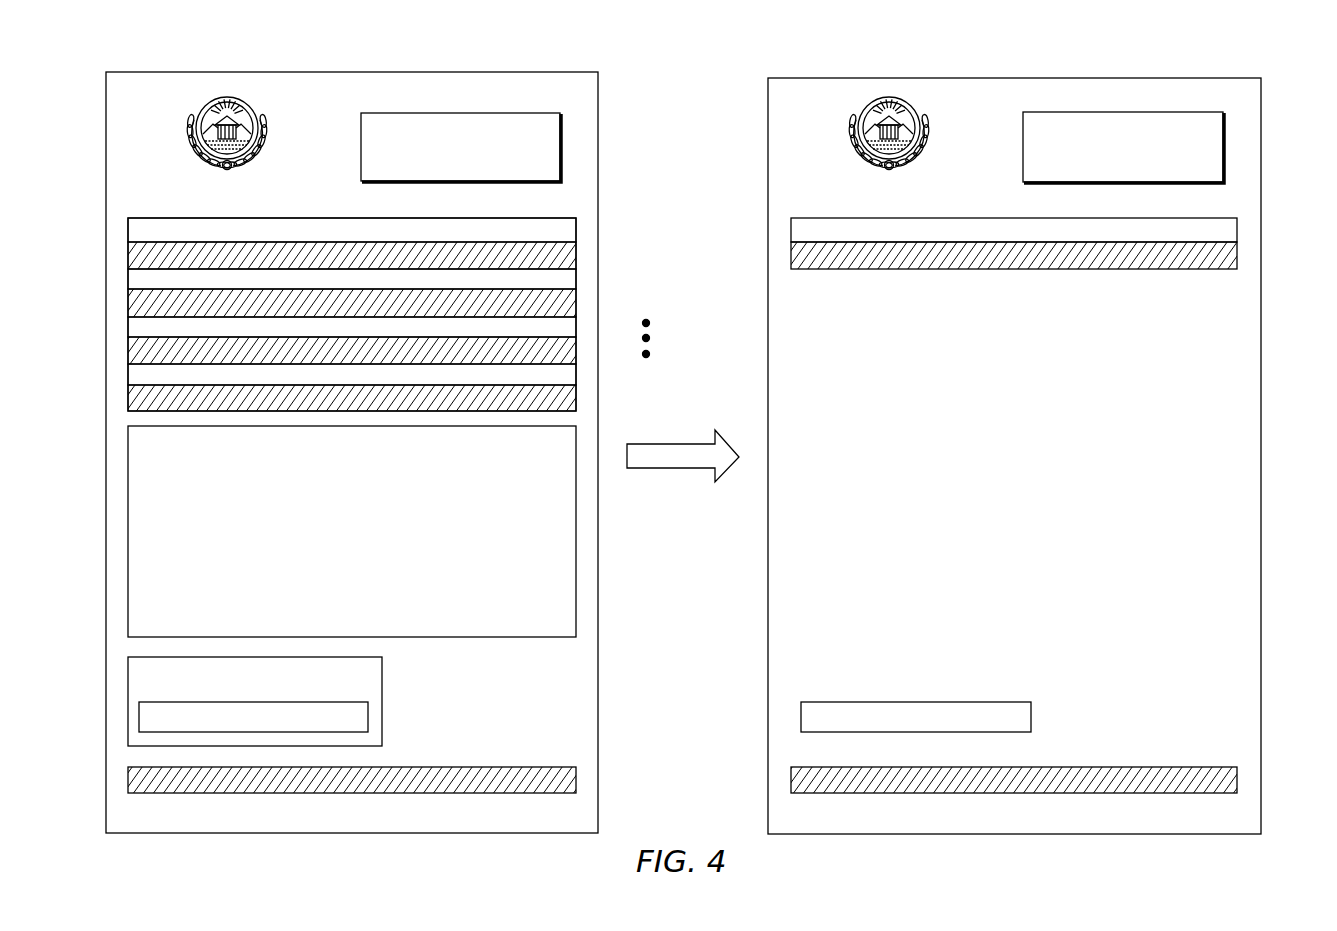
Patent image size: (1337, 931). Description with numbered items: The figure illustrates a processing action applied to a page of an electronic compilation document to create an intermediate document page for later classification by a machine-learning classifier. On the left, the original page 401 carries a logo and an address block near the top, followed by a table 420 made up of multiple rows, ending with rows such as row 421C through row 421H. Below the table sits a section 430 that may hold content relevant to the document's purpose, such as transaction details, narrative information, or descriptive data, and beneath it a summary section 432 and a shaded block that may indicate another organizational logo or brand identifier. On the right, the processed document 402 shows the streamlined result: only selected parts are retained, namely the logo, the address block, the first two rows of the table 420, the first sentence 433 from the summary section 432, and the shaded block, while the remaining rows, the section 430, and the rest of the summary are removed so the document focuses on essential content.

The original page 401 is at (184, 31).
The processed document 402 is at (845, 31).
The table 420 is at (184, 191).
The table row 421C is at (576, 279).
The table row 421H is at (576, 392).
The section 430 is at (352, 531).
The summary section 432 is at (255, 701).
The first sentence 433 is at (990, 702).